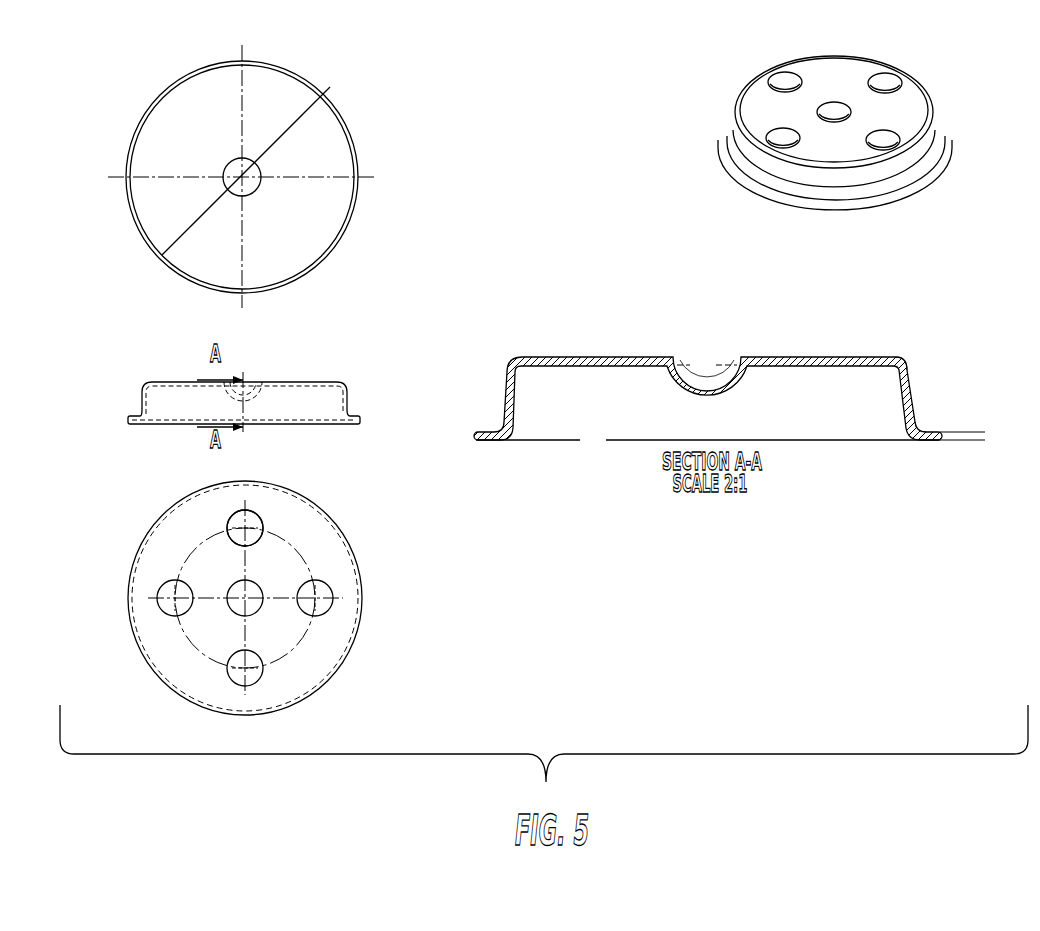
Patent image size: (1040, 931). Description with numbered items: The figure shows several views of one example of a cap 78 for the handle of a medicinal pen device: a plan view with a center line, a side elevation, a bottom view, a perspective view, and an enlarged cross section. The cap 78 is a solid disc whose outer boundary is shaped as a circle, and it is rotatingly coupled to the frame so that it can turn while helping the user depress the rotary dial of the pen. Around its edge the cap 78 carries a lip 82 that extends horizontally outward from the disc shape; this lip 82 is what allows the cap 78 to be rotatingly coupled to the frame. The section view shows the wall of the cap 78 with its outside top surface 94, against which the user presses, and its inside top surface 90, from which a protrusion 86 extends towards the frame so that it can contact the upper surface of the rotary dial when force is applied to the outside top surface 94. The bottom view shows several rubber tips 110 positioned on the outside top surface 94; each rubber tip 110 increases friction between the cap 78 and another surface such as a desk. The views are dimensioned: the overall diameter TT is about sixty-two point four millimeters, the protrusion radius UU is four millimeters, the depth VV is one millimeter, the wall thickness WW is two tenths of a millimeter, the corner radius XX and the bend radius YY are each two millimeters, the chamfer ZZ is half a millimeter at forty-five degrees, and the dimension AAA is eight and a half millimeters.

The cap diameter TT is at (326, 90).
The cap 78 is at (348, 398).
The lip 82 is at (352, 420).
The rubber tip 110 is at (253, 511).
The aperture dimension AAA is at (264, 522).
The outside top surface 94 is at (596, 357).
The inside top surface 90 is at (556, 366).
The protrusion 86 is at (720, 398).
The protrusion radius UU is at (690, 375).
The depth dimension VV is at (835, 400).
The thickness dimension WW is at (870, 380).
The corner radius XX is at (903, 356).
The bend radius YY is at (919, 425).
The chamfer dimension ZZ is at (977, 410).